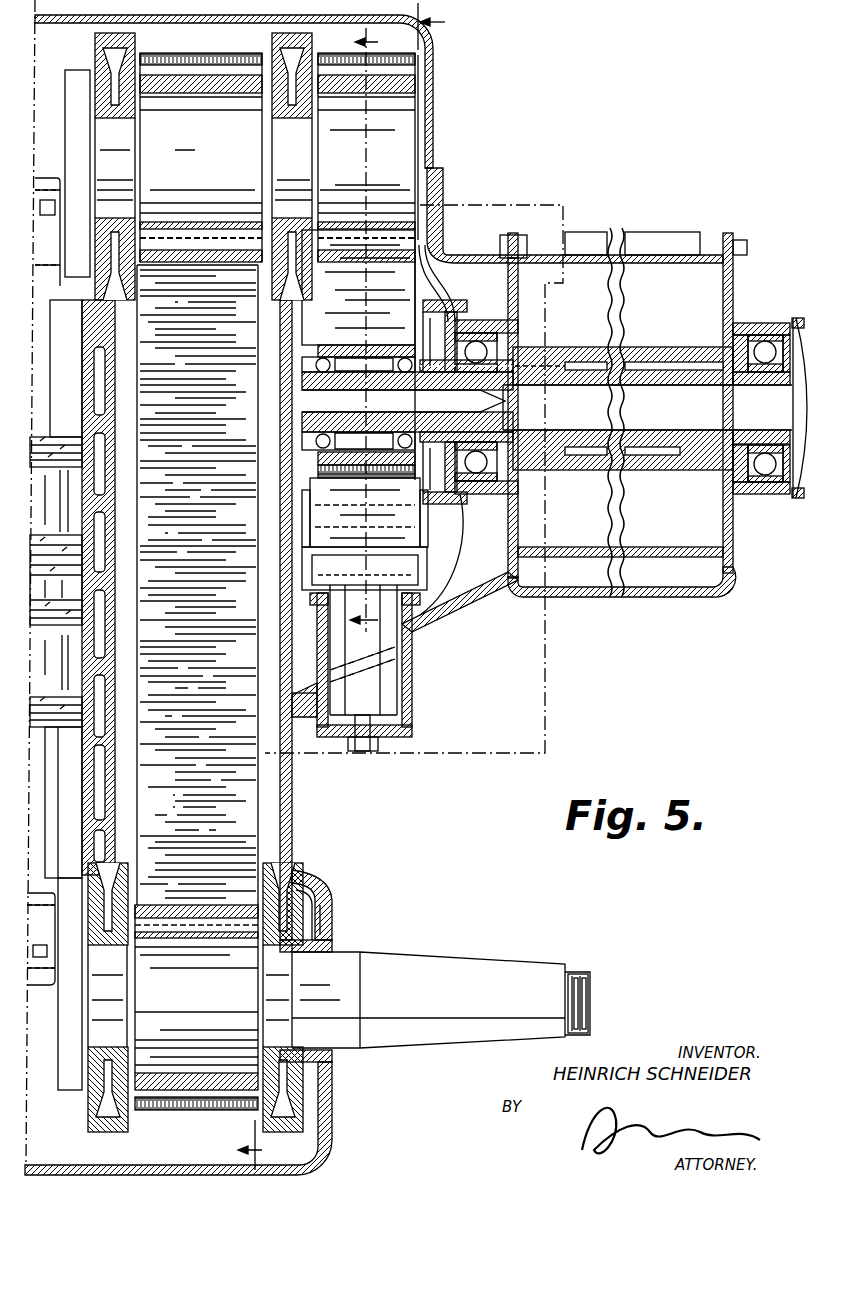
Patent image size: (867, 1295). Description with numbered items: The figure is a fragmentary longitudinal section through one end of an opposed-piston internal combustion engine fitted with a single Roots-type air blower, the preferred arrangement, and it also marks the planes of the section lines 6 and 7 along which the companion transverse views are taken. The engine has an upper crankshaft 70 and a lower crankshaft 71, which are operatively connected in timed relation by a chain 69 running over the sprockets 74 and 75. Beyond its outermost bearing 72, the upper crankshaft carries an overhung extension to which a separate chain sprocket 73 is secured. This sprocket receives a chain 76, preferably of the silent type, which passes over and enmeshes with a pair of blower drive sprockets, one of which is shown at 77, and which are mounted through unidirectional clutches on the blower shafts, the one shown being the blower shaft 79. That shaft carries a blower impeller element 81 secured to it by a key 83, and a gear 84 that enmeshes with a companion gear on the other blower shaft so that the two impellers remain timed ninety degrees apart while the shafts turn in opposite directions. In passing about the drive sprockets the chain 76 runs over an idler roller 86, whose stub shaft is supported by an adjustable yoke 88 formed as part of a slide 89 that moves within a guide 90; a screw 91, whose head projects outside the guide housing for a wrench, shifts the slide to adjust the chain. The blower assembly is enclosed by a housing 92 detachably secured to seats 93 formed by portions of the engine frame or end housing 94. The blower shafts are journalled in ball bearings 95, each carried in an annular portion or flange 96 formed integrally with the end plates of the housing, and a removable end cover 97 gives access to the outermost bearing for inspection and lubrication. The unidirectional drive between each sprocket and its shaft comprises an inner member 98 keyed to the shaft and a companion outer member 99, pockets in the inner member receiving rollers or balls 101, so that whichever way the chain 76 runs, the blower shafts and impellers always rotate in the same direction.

The section line 6- 6 is at (351, 586).
The section line 7- 7 is at (414, 390).
The chain 69 is at (196, 624).
The upper crankshaft 70 is at (290, 153).
The lower crankshaft 71 is at (290, 987).
The outermost bearing 72 is at (290, 127).
The chain sprocket 73 is at (403, 82).
The sprocket 74 is at (206, 85).
The sprocket 75 is at (180, 1075).
The chain 76 is at (420, 62).
The blower drive sprocket 77 is at (340, 348).
The blower shaft 79 is at (580, 368).
The blower impeller element 81 is at (555, 472).
The key 83 is at (688, 360).
The gear 84 is at (462, 500).
The idler roller 86 is at (338, 502).
The adjustable yoke 88 is at (427, 562).
The slide 89 is at (377, 670).
The guide 90 is at (413, 688).
The screw 91 is at (372, 752).
The housing 92 is at (492, 252).
The seat 93 is at (446, 170).
The engine frame or end housing 94 is at (440, 52).
The ball bearing 95 is at (476, 342).
The annular portion or flange 96 is at (514, 303).
The removable end cover 97 is at (795, 500).
The inner member 98 is at (388, 440).
The outer member 99 is at (372, 444).
The rollers or balls 101 is at (348, 438).